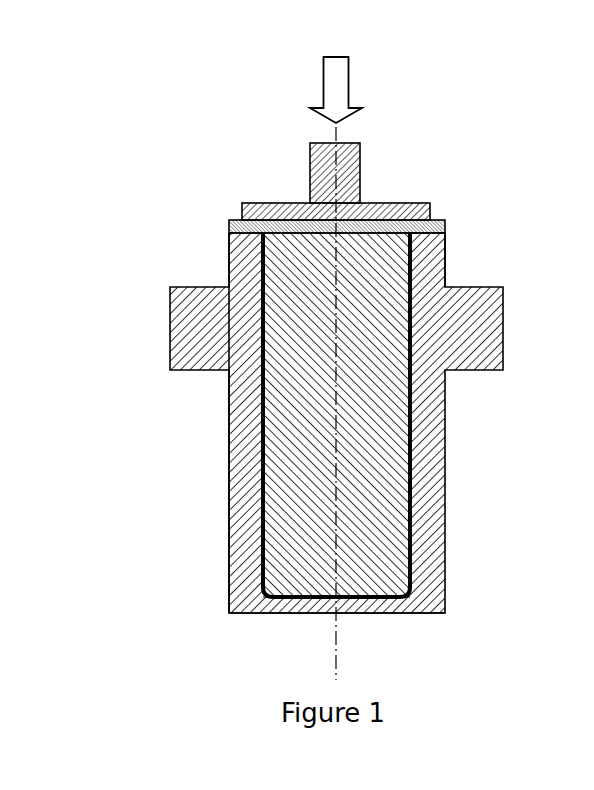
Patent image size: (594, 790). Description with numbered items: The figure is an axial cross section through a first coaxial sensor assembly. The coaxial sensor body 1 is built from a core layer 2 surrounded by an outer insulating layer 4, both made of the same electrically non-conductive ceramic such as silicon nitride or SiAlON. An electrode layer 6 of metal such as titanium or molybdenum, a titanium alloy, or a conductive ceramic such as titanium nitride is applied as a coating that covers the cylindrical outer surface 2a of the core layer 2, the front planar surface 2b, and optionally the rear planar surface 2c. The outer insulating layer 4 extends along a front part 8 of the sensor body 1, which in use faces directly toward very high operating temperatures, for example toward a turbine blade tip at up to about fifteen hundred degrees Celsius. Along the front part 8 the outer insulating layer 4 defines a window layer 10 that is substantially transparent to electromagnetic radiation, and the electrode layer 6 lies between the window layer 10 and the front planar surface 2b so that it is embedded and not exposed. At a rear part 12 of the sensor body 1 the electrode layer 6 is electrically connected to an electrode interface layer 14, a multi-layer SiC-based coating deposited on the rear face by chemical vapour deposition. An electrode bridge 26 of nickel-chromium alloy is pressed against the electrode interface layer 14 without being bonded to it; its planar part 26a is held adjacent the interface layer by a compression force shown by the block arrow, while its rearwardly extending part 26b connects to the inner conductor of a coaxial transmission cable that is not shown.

The coaxial sensor body 1 is at (311, 395).
The core layer 2 is at (348, 438).
The cylindrical outer surface 2a is at (372, 415).
The front planar surface 2b is at (386, 594).
The rear planar surface 2c is at (297, 240).
The outer insulating layer 4 is at (445, 245).
The electrode layer 6 is at (257, 505).
The front part 8 is at (245, 640).
The window layer 10 is at (315, 613).
The rear part 12 is at (455, 227).
The electrode interface layer 14 is at (240, 229).
The electrode bridge 26 is at (358, 130).
The planar part 26a is at (390, 207).
The rearwardly extending part 26b is at (360, 162).